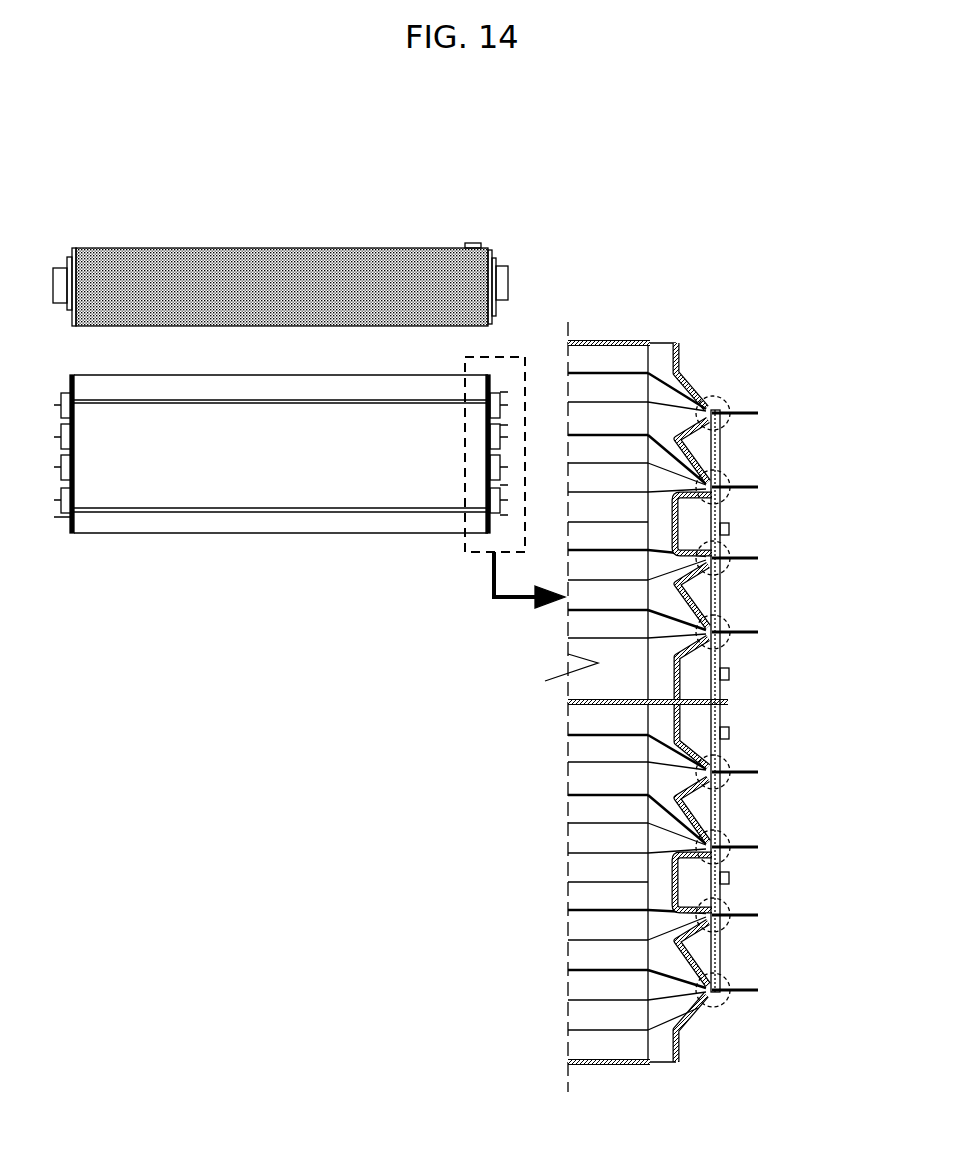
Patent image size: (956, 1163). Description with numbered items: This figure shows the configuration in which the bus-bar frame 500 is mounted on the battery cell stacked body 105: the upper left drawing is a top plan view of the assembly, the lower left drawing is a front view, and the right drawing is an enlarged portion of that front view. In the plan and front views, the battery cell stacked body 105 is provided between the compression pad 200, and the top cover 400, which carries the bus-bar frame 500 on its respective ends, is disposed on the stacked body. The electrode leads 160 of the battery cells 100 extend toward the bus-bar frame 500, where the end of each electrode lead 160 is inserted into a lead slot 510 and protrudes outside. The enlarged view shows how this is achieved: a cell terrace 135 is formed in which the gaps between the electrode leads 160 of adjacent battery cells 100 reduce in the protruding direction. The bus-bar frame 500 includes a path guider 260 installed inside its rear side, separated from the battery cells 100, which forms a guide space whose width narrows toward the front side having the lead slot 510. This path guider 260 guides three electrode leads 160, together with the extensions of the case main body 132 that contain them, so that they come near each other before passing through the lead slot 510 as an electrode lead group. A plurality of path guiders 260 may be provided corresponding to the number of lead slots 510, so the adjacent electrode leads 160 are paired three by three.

The battery cell 100 is at (585, 870).
The battery cell stacked body 105 is at (545, 972).
The case main body 132 is at (598, 717).
The cell terrace 135 is at (665, 912).
The electrode lead 160 is at (58, 268).
The compression pad 200 is at (285, 278).
The path guider 260 is at (706, 596).
The top cover 400 is at (290, 485).
The bus-bar frame 500 is at (76, 252).
The lead slot 510 is at (725, 565).